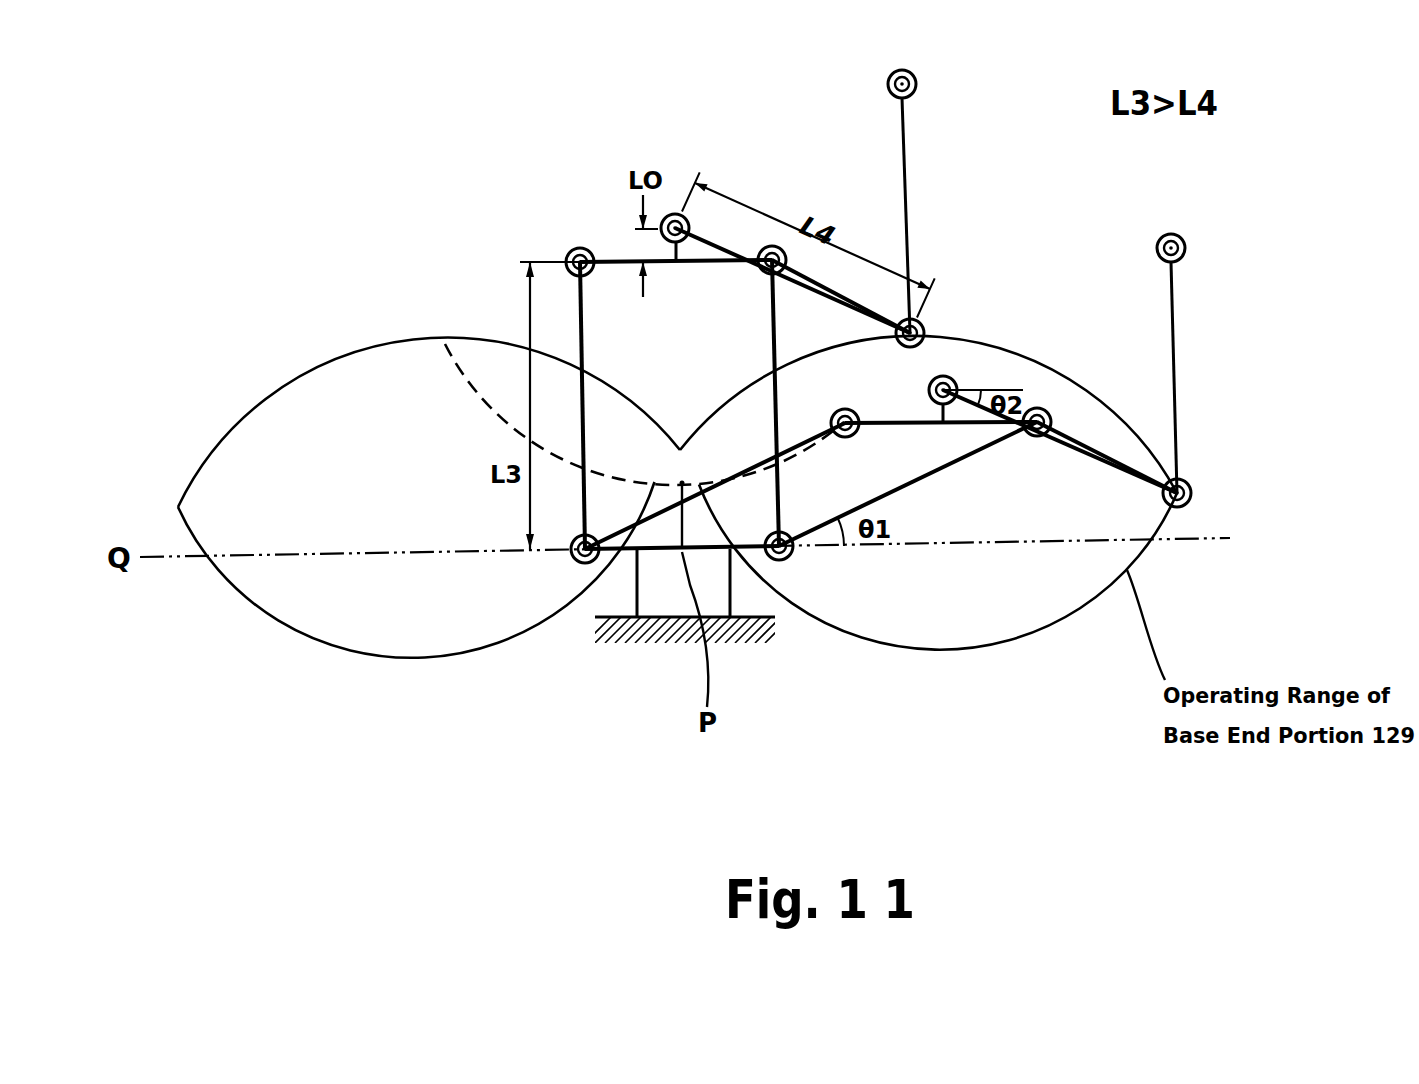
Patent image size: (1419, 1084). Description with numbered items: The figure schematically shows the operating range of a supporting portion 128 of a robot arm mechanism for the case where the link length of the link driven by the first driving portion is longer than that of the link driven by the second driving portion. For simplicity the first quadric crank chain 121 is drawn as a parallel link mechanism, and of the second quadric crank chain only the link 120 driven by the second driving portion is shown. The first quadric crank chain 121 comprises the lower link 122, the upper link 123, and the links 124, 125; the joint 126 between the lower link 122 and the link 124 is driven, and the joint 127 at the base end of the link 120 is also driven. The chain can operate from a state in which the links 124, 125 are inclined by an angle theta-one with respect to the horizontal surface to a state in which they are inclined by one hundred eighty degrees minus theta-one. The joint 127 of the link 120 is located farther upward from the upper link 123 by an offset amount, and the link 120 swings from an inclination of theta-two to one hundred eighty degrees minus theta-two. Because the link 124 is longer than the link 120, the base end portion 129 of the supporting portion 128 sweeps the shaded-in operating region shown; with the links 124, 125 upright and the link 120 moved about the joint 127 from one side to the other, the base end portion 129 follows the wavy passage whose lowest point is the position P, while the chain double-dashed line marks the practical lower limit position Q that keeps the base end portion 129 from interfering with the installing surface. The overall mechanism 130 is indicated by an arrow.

The link driven by second driving portion 120 is at (887, 322).
The first quadric crank chain 121 is at (536, 244).
The lower link 122 is at (700, 550).
The upper link 123 is at (613, 260).
The link 124 is at (775, 332).
The link 125 is at (580, 330).
The joint 126 is at (790, 553).
The joint 127 is at (668, 207).
The supporting portion 128 is at (908, 157).
The base end portion 129 is at (925, 325).
The link mechanism 130 is at (452, 252).